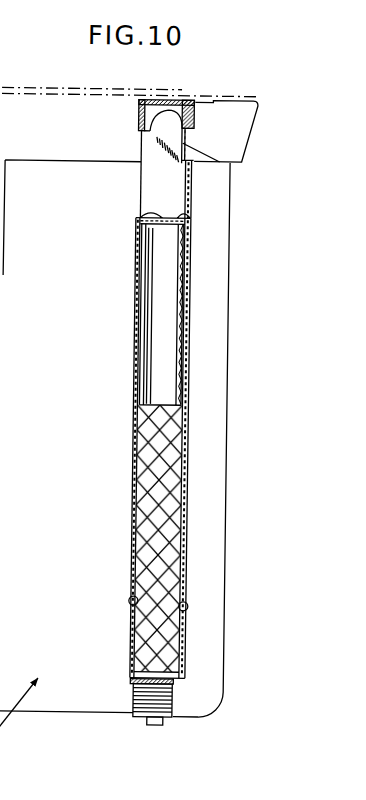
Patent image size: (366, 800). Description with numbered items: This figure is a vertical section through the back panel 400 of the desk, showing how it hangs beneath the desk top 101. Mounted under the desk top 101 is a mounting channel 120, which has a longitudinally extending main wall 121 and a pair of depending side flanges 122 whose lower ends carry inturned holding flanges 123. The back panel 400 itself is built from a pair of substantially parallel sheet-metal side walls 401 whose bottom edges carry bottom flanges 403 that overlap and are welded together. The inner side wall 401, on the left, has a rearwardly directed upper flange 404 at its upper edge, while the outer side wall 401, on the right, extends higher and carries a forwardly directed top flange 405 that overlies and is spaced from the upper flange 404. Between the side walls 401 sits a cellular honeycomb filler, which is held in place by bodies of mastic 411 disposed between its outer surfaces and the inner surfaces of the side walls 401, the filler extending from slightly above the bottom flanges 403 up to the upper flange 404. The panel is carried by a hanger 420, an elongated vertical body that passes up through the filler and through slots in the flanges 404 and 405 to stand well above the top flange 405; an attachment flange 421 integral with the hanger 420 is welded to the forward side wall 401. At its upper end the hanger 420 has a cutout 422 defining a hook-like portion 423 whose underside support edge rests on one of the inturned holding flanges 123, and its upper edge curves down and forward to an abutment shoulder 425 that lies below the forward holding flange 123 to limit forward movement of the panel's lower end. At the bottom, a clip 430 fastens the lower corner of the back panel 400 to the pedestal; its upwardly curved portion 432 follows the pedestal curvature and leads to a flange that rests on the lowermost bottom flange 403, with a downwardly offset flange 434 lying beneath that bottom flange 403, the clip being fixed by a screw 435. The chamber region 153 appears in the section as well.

The desk top 101 is at (59, 113).
The mounting channel 120 is at (178, 93).
The main wall 121 is at (142, 98).
The side flange 122 is at (188, 110).
The inturned holding flange 123 is at (190, 131).
The chamber 153 is at (45, 507).
The back panel 400 is at (186, 525).
The side wall 401 is at (138, 449).
The bottom flange 403 is at (176, 675).
The upper flange 404 is at (138, 217).
The top flange 405 is at (189, 163).
The body of mastic 411 is at (136, 604).
The hanger 420 is at (158, 182).
The attachment flange 421 is at (136, 294).
The cutout 422 is at (227, 168).
The hook-like portion 423 is at (135, 116).
The abutment shoulder 425 is at (138, 130).
The clip 430 is at (136, 708).
The upwardly curved portion 432 is at (150, 723).
The offset flange 434 is at (138, 685).
The screw 435 is at (160, 725).